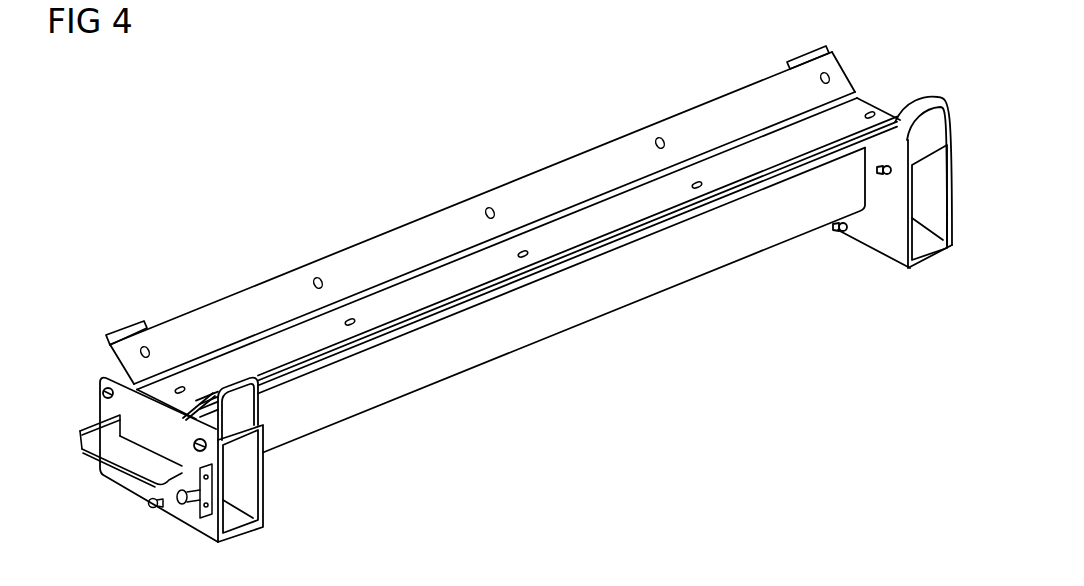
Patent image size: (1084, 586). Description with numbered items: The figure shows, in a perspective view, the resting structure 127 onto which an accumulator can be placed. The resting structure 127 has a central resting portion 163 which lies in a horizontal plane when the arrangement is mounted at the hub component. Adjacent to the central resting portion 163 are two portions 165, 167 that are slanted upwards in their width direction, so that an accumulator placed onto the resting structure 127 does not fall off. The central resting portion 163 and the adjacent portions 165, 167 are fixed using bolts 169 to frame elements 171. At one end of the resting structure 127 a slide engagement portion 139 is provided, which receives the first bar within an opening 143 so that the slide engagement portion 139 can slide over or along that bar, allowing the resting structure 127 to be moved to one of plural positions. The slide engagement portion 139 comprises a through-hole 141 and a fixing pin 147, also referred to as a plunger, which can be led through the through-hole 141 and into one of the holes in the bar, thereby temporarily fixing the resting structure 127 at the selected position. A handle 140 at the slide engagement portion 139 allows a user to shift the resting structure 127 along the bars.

The resting structure 127 is at (372, 140).
The slide engagement portion 139 is at (88, 396).
The handle 140 is at (122, 468).
The through-hole 141 is at (264, 503).
The opening 143 is at (252, 470).
The fixing pin 147 is at (173, 507).
The central resting portion 163 is at (448, 275).
The slanted portion 165 is at (541, 180).
The slanted portion 167 is at (285, 348).
The bolt 169 is at (317, 277).
The frame element 171 is at (927, 120).